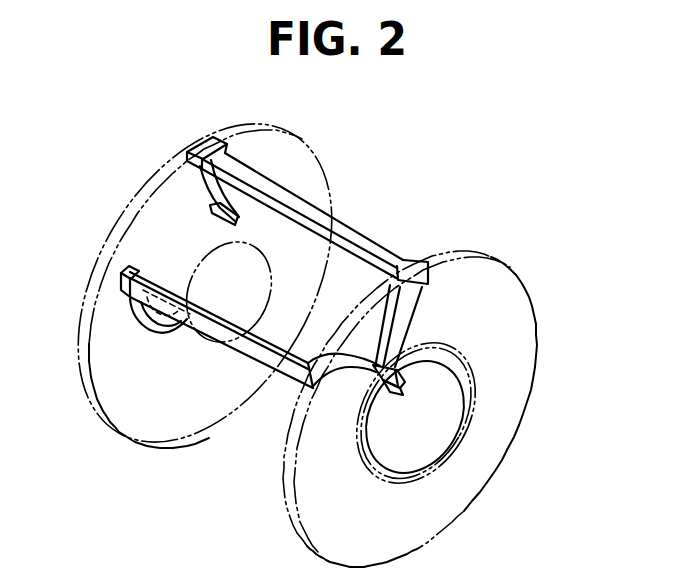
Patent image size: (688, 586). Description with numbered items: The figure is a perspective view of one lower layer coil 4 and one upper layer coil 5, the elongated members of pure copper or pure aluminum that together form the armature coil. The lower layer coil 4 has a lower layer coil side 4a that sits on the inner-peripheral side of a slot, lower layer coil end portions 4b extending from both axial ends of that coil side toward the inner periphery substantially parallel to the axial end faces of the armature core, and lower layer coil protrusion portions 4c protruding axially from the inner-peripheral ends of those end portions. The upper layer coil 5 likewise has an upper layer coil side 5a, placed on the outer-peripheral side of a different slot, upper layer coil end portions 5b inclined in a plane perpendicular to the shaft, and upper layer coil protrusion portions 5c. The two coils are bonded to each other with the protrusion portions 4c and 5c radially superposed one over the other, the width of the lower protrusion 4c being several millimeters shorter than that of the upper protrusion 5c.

The lower layer coil 4 is at (282, 389).
The lower layer coil side 4a is at (186, 334).
The lower layer coil end portion 4b is at (337, 380).
The lower layer coil protrusion portion 4c is at (405, 384).
The upper layer coil 5 is at (366, 226).
The upper layer coil side 5a is at (280, 187).
The upper layer coil end portion 5b is at (413, 288).
The upper layer coil protrusion portion 5c is at (404, 374).